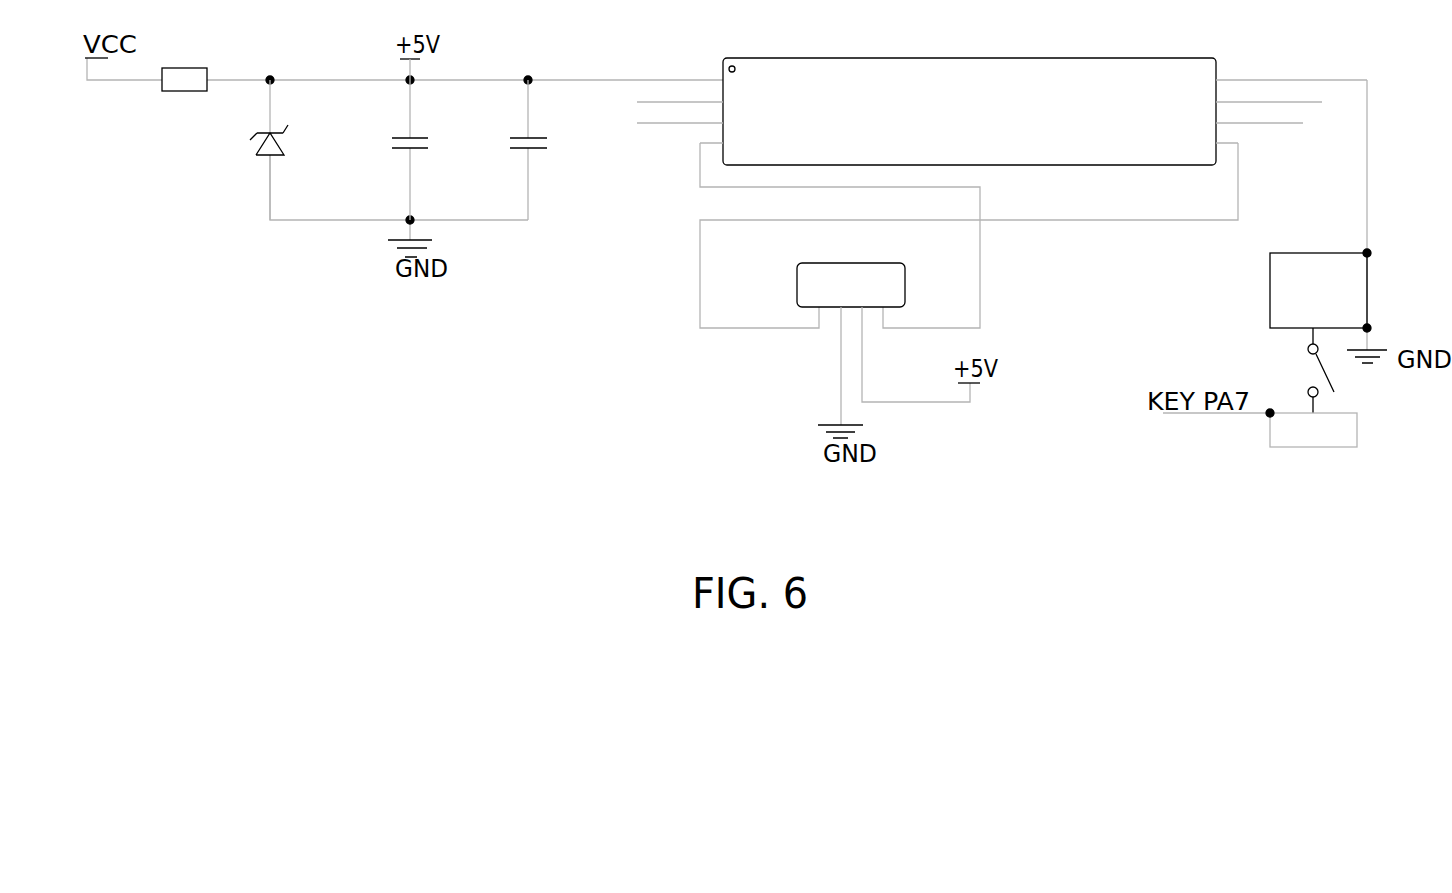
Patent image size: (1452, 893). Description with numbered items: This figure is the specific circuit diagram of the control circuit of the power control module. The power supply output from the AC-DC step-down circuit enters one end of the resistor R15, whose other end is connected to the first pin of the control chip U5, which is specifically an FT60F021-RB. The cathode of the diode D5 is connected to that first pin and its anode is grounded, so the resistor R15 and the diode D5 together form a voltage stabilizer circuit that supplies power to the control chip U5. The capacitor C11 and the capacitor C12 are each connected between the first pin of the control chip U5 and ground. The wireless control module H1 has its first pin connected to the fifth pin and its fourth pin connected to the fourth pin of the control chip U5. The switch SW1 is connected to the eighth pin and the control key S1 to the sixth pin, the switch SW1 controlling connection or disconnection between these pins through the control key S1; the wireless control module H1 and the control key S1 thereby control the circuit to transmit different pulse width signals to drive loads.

The resistor R15 is at (188, 58).
The diode D5 is at (294, 150).
The capacitor C11 is at (442, 150).
The capacitor C12 is at (554, 150).
The control chip U5 is at (1002, 86).
The wireless control module H1 is at (819, 280).
The switch SW1 is at (1318, 291).
The control key S1 is at (1314, 387).